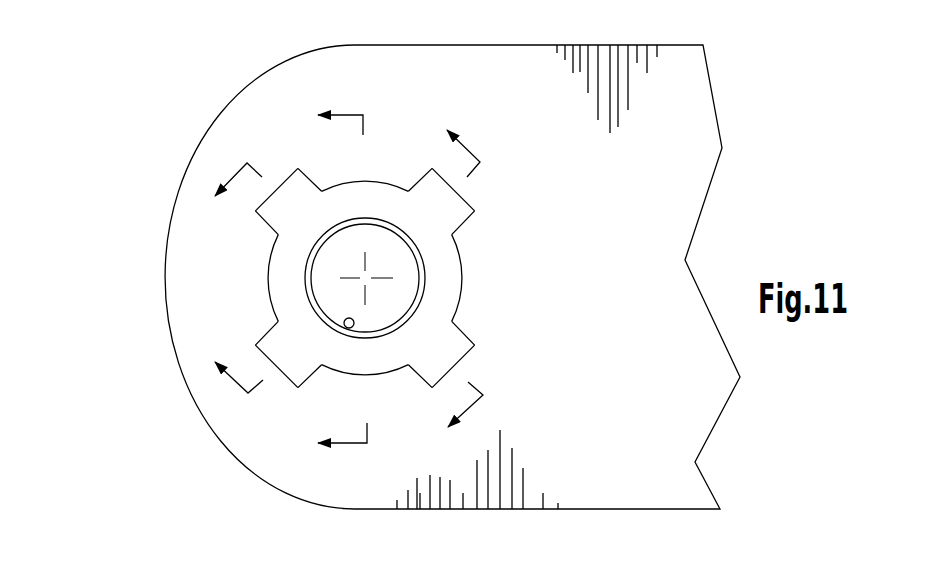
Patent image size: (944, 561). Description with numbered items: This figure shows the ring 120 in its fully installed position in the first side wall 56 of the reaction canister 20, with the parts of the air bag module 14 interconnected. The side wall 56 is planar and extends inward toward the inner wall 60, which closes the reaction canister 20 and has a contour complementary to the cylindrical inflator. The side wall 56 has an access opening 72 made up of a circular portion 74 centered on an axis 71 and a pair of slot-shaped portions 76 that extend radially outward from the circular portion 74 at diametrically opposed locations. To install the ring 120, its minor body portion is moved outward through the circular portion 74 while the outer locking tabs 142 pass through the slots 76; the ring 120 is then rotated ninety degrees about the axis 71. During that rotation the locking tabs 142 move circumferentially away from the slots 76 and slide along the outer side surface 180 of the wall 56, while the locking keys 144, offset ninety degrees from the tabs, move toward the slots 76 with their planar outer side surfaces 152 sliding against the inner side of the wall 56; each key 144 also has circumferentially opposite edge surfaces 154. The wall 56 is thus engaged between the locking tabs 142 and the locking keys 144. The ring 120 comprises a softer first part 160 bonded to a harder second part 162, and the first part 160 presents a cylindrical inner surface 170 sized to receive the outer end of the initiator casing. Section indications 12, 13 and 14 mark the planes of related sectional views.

The reaction canister 20 is at (118, 128).
The first side wall 56 is at (465, 478).
The inner wall 60 is at (163, 257).
The axis 71 is at (367, 276).
The access opening 72 is at (266, 281).
The circular portion 74 is at (380, 182).
The slot-shaped portions 76 is at (339, 263).
The ring 120 is at (272, 294).
The outer locking tabs 142 is at (339, 277).
The locking keys 144 is at (280, 203).
The planar outer side surface 152 is at (270, 184).
The circumferentially opposite edge surfaces 154 is at (313, 178).
The first part 160 is at (425, 262).
The second part 162 is at (462, 278).
The cylindrical inner surface 170 is at (352, 328).
The outer side surface 180 is at (253, 313).
The section line 12- 12 is at (337, 247).
The section line 13- 13 is at (333, 307).
The air bag module 14 is at (323, 281).